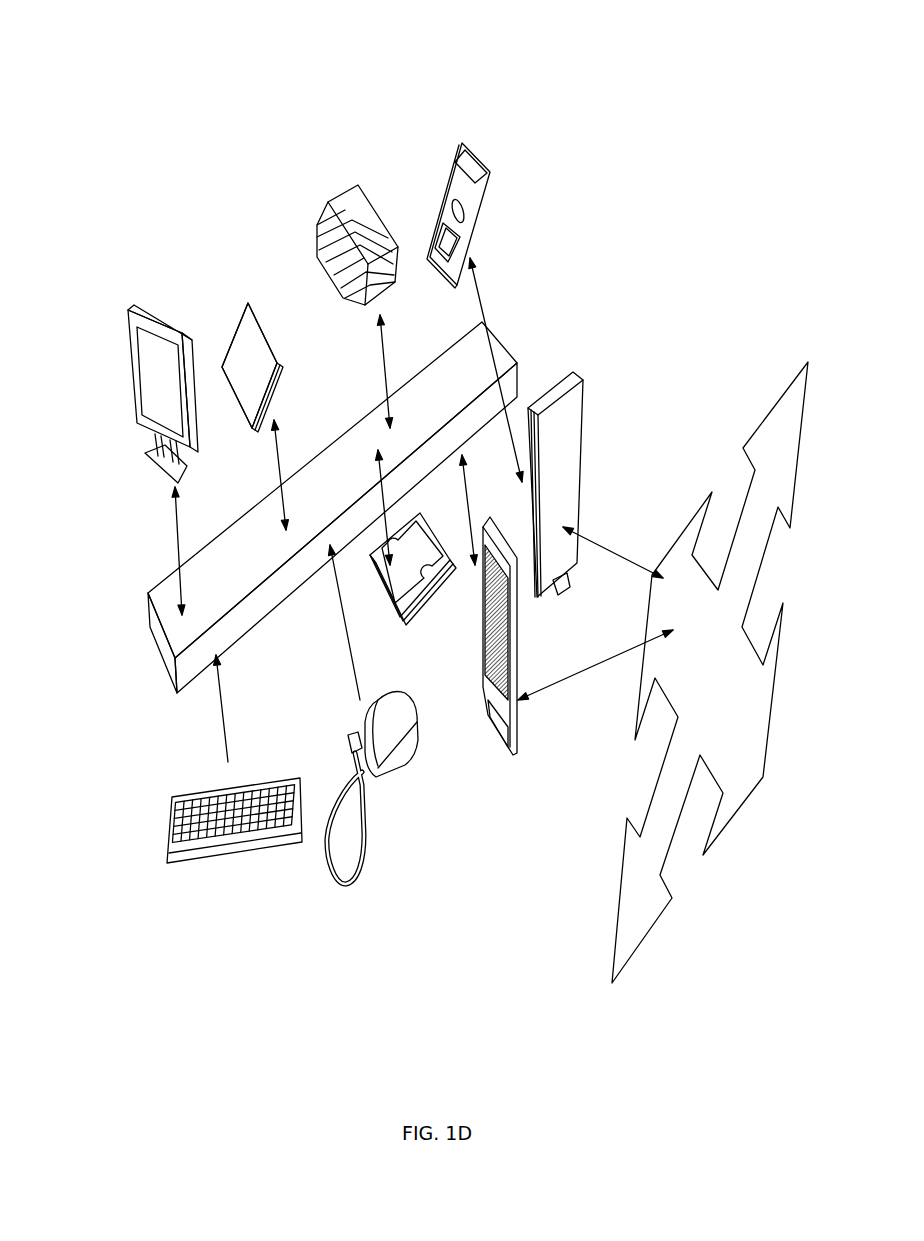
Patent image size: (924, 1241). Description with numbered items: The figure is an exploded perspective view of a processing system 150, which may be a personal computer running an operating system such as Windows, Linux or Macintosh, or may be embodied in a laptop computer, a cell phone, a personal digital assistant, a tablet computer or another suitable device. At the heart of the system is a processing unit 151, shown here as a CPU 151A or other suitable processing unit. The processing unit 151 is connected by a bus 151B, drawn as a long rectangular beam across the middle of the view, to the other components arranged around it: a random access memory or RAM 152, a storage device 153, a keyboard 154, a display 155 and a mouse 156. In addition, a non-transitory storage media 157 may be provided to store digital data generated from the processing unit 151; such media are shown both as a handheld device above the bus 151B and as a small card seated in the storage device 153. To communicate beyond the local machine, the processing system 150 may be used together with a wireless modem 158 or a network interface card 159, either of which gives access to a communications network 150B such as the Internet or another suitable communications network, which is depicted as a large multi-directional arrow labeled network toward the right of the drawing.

The processing system 150 is at (95, 72).
The communications network 150B is at (644, 866).
The processing unit 151 is at (249, 303).
The CPU 151A is at (262, 348).
The bus 151B is at (153, 625).
The random access memory 152 is at (340, 193).
The storage device 153 is at (392, 620).
The keyboard 154 is at (196, 863).
The display 155 is at (149, 310).
The mouse 156 is at (388, 768).
The non-transitory storage media 157 is at (470, 153).
The wireless modem 158 is at (576, 372).
The network interface card 159 is at (503, 730).